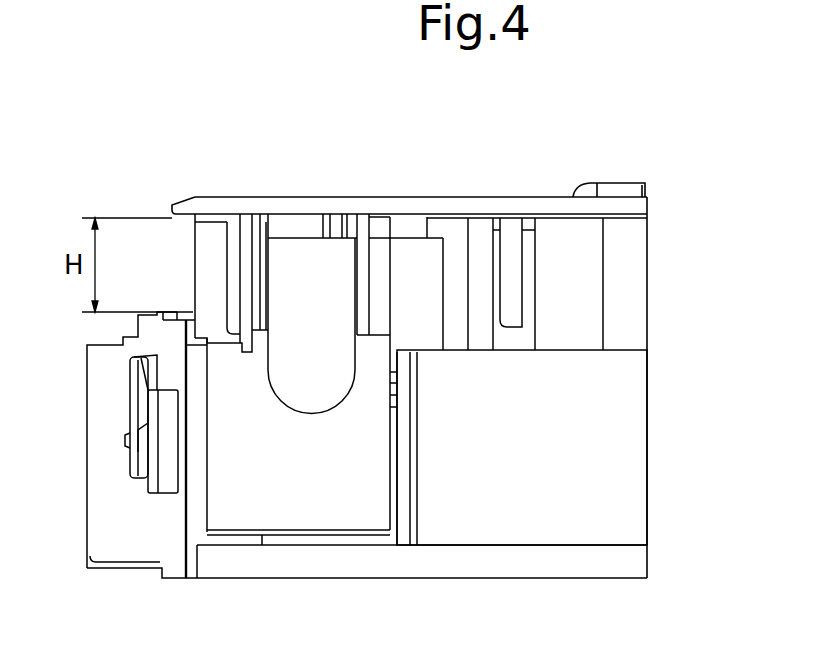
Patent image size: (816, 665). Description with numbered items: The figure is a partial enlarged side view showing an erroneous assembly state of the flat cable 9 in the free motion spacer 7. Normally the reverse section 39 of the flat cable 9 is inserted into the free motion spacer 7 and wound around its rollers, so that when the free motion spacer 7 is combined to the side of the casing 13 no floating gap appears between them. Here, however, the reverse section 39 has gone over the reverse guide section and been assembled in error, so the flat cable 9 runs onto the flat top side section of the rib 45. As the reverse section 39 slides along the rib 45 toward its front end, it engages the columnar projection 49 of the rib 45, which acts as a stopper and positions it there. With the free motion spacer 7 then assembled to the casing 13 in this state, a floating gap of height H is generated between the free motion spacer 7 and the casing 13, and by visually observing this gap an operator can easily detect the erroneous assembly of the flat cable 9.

The free motion spacer 7 is at (425, 198).
The flat cable 9 is at (615, 432).
The casing 13 is at (563, 578).
The reverse section 39 is at (235, 468).
The rib 45 is at (235, 273).
The projection 49 is at (205, 346).